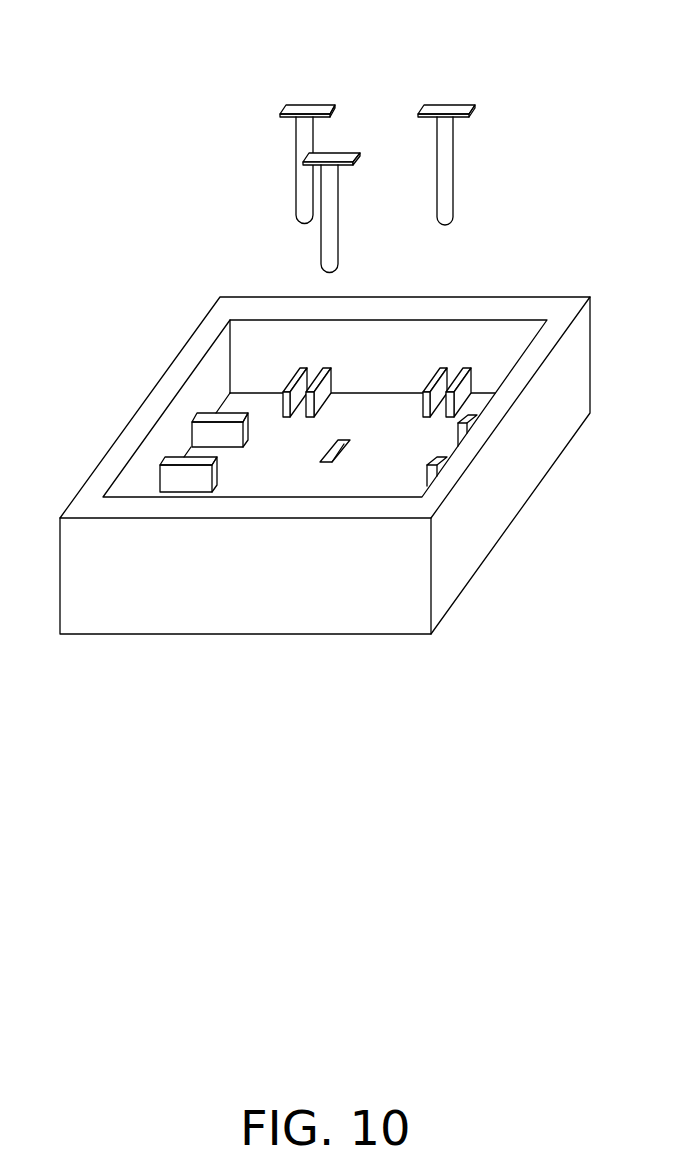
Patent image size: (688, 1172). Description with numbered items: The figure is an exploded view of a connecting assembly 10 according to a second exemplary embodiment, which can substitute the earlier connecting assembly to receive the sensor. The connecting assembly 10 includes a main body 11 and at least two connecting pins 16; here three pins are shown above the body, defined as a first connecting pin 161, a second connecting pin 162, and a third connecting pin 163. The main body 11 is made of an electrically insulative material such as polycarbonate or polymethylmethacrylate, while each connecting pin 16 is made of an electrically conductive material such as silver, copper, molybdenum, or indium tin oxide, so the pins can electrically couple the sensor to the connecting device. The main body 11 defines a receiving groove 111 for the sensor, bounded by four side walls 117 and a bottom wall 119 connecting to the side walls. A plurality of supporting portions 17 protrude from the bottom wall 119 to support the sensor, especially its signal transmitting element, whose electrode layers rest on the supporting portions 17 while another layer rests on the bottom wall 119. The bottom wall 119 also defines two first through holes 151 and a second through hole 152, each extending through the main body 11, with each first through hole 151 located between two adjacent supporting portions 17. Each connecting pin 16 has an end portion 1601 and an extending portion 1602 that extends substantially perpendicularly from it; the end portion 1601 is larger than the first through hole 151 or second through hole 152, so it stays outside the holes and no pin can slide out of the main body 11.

The connecting assembly 10 is at (178, 43).
The main body 11 is at (520, 476).
The receiving groove 111 is at (262, 330).
The side wall 117 is at (377, 332).
The bottom wall 119 is at (247, 480).
The supporting portion 17 is at (297, 378).
The first through hole 151 is at (297, 415).
The second through hole 152 is at (337, 443).
The connecting pin 16 is at (434, 189).
The first connecting pin 161 is at (320, 134).
The second connecting pin 162 is at (345, 190).
The third connecting pin 163 is at (462, 185).
The end portion 1601 is at (420, 107).
The extending portion 1602 is at (445, 210).